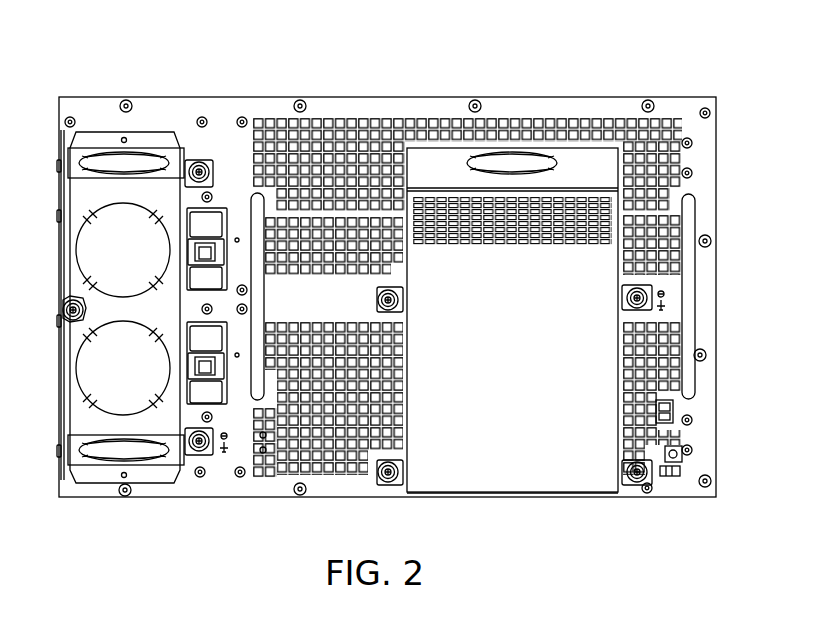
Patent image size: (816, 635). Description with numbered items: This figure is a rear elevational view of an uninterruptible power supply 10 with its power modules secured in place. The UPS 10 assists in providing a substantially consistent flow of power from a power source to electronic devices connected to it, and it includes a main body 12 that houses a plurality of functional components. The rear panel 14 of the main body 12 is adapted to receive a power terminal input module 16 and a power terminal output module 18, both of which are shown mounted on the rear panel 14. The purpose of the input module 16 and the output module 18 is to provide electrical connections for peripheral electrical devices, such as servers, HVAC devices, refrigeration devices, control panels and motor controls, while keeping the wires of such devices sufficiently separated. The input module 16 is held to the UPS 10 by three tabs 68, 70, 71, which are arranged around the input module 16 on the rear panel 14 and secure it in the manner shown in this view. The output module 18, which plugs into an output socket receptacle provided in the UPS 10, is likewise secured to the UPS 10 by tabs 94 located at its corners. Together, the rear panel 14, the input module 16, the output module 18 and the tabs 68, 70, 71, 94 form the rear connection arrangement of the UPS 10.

The uninterruptible power supply 10 is at (665, 96).
The main body 12 is at (323, 97).
The rear panel 14 is at (678, 488).
The power terminal input module 16 is at (75, 374).
The power terminal output module 18 is at (528, 460).
The tab 68 is at (211, 457).
The tab 70 is at (204, 158).
The tab 71 is at (70, 300).
The tabs 94 is at (376, 289).